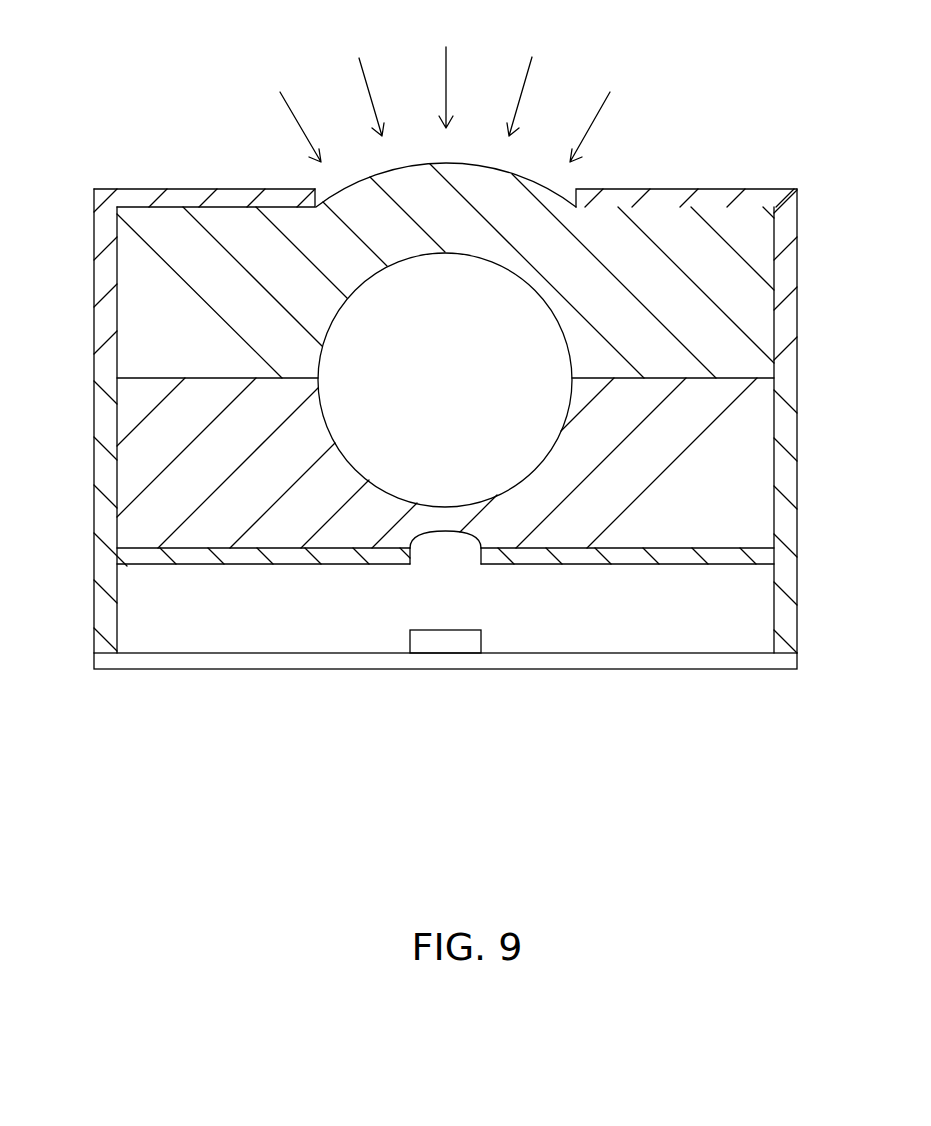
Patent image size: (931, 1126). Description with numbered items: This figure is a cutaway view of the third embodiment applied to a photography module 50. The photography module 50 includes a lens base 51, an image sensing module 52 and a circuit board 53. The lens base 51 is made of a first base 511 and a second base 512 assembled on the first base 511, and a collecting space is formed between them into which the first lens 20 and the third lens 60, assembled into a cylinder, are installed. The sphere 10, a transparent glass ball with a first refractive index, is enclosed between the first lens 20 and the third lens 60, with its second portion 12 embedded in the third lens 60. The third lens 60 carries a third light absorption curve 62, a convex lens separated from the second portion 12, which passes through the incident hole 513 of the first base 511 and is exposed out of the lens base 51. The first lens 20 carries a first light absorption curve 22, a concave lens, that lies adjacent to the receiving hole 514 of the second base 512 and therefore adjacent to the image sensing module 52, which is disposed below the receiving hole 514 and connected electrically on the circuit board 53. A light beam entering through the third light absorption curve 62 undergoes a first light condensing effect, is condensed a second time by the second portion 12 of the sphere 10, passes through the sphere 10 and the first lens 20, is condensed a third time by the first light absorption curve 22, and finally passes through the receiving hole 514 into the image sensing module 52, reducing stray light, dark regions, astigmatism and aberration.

The sphere 10 is at (525, 357).
The second portion 12 is at (558, 317).
The first lens 20 is at (757, 413).
The first light absorption curve 22 is at (467, 534).
The photography module 50 is at (110, 671).
The lens base 51 is at (129, 188).
The first base 511 is at (105, 228).
The second base 512 is at (105, 555).
The incident hole 513 is at (307, 196).
The receiving hole 514 is at (428, 557).
The image sensing module 52 is at (443, 645).
The circuit board 53 is at (670, 661).
The third lens 60 is at (137, 265).
The third light absorption curve 62 is at (490, 167).